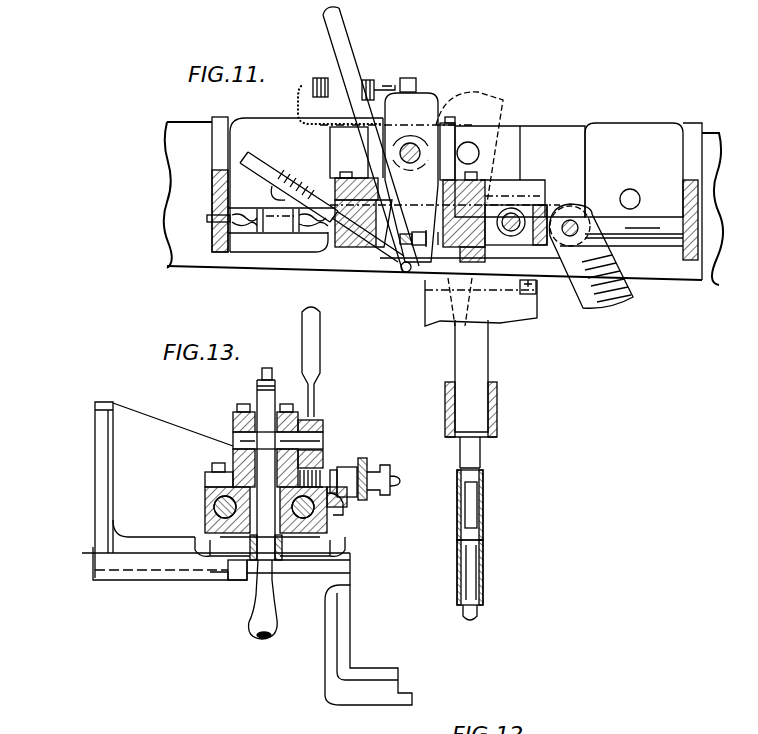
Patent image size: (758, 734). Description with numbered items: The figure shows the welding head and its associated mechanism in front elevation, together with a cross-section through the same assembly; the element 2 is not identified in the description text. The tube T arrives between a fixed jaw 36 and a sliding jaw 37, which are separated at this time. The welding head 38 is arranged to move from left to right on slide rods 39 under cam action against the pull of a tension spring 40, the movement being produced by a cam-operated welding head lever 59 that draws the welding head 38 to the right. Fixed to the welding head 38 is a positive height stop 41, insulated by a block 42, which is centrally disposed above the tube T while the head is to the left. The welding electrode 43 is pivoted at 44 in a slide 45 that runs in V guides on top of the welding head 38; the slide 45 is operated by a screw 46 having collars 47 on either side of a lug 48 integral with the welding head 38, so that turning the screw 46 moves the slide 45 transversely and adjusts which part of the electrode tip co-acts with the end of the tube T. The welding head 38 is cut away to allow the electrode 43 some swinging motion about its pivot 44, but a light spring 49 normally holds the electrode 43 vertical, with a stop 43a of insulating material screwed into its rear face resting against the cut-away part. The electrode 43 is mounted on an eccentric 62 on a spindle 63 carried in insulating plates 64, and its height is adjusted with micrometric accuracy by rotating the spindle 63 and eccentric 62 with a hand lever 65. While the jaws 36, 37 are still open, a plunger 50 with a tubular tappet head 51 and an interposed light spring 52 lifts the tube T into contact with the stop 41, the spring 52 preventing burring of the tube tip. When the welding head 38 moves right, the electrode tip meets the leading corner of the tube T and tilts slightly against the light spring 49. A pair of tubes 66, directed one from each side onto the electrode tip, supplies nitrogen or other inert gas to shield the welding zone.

In FIG. 11, the cup 2 is at (498, 418).
In FIG. 11, the fixed jaw 36 is at (505, 283).
In FIG. 13, the fixed jaw 36 is at (328, 571).
In FIG. 13, the sliding jaw 37 is at (243, 578).
In FIG. 11, the welding head 38 is at (362, 248).
In FIG. 13, the welding head 38 is at (205, 518).
In FIG. 11, the slide rods 39 is at (668, 226).
In FIG. 13, the slide rods 39 is at (210, 505).
In FIG. 11, the tension spring 40 is at (265, 230).
In FIG. 11, the positive height stop 41 is at (470, 262).
In FIG. 13, the positive height stop 41 is at (276, 565).
In FIG. 11, the block 42 is at (449, 262).
In FIG. 13, the block 42 is at (288, 565).
In FIG. 11, the welding electrode 43 is at (438, 120).
In FIG. 13, the welding electrode 43 is at (262, 575).
In FIG. 11, the stop 43a is at (420, 270).
In FIG. 11, the pivot 44 is at (400, 153).
In FIG. 11, the slide 45 is at (342, 178).
In FIG. 13, the screw 46 is at (365, 460).
In FIG. 13, the collars 47 is at (354, 467).
In FIG. 13, the lug 48 is at (345, 502).
In FIG. 11, the light spring 49 is at (320, 80).
In FIG. 11, the plunger 50 is at (478, 612).
In FIG. 11, the tubular tappet head 51 is at (484, 564).
In FIG. 11, the light spring 52 is at (482, 490).
In FIG. 11, the welding head lever 59 is at (590, 305).
In FIG. 11, the eccentric 62 is at (452, 124).
In FIG. 13, the eccentric 62 is at (253, 445).
In FIG. 11, the spindle 63 is at (408, 166).
In FIG. 13, the spindle 63 is at (313, 440).
In FIG. 13, the insulating plates 64 is at (268, 440).
In FIG. 11, the hand lever 65 is at (355, 46).
In FIG. 13, the hand lever 65 is at (322, 342).
In FIG. 11, the tubes 66 is at (258, 170).
In FIG. 13, the tubes 66 is at (200, 545).
In FIG. 11, the tube T is at (470, 352).
In FIG. 13, the tube T is at (264, 623).